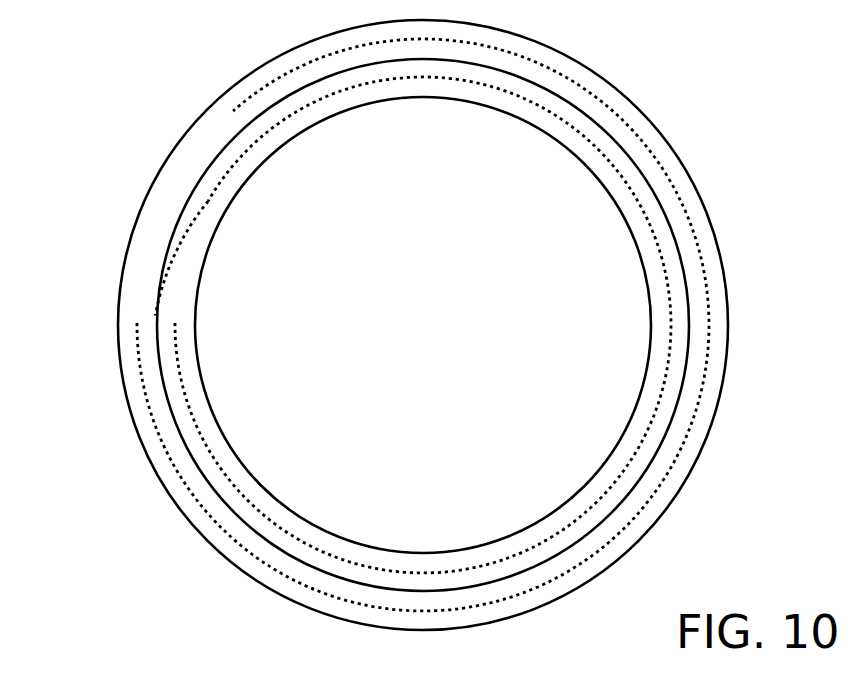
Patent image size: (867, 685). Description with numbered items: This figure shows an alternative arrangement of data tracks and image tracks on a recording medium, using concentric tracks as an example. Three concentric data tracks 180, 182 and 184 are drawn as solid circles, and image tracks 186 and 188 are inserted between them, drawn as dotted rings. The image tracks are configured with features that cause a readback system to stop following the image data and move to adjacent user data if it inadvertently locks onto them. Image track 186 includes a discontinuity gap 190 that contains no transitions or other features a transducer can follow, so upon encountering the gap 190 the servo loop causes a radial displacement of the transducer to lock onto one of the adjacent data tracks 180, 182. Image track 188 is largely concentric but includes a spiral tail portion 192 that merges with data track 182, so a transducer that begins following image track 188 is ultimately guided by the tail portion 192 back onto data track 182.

The data track 180 is at (216, 97).
The data track 182 is at (472, 62).
The data track 184 is at (338, 113).
The image track 186 is at (192, 493).
The image track 188 is at (193, 420).
The discontinuity gap 190 is at (142, 230).
The spiral tail portion 192 is at (202, 193).